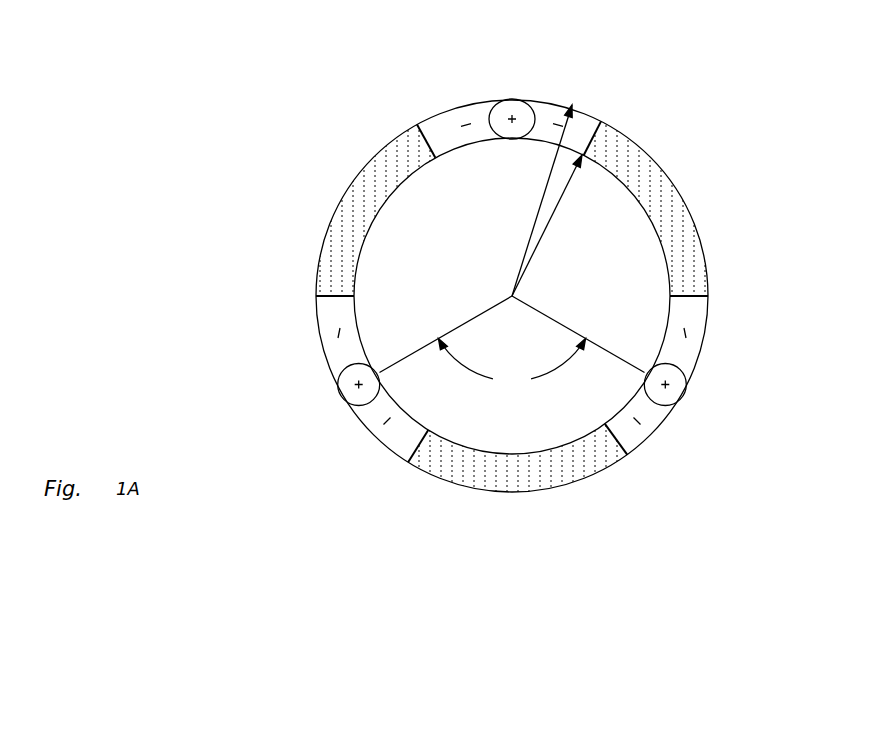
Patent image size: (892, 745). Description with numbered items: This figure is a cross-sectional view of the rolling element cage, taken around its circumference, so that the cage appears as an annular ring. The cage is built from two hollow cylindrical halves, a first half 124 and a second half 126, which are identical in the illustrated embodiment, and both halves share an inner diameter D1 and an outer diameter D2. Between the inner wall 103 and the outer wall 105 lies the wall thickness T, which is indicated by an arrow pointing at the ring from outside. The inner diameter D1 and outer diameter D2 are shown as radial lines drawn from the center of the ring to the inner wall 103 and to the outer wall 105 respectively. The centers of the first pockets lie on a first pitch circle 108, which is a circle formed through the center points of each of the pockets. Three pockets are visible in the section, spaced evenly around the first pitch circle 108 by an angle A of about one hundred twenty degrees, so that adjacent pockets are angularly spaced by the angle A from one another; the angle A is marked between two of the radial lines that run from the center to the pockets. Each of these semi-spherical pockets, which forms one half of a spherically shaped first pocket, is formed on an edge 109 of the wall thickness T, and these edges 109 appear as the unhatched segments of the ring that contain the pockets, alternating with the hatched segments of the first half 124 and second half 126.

The inner wall 103 is at (365, 237).
The outer wall 105 is at (325, 222).
The first pitch circle 108 is at (685, 268).
The edge 109 is at (600, 130).
The first half 124 is at (363, 158).
The second half 126 is at (483, 97).
The angle A is at (512, 348).
The inner diameter D1 is at (633, 202).
The outer diameter D2 is at (547, 187).
The wall thickness T is at (667, 170).